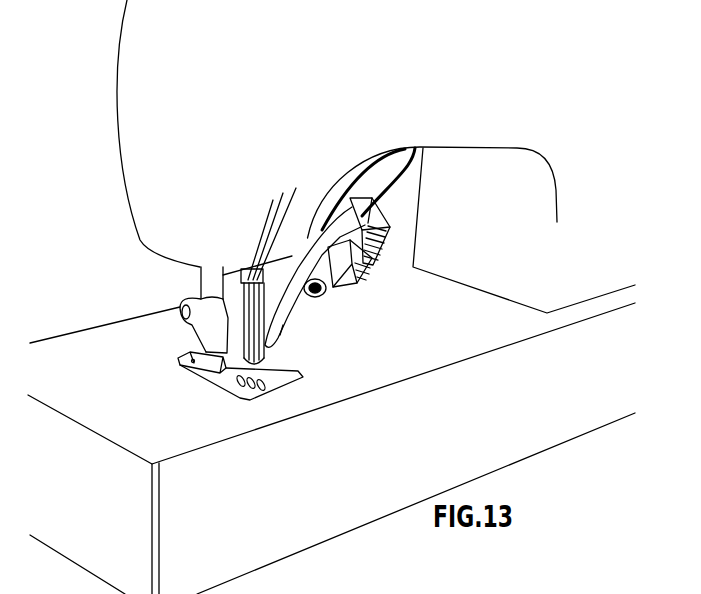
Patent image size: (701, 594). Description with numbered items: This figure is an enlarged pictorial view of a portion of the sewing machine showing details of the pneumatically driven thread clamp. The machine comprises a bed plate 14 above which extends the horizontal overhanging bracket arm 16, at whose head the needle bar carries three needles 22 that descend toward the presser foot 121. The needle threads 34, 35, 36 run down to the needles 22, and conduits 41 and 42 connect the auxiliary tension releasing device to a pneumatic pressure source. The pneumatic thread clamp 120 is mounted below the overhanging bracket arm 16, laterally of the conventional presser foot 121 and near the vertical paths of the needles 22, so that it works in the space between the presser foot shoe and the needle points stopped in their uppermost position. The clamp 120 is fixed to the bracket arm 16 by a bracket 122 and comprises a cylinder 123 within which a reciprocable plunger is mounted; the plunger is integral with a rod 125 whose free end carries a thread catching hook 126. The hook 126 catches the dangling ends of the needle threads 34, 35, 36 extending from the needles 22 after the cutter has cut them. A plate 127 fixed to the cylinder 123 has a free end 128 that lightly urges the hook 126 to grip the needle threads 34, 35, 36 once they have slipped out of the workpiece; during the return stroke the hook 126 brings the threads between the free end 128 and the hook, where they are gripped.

The bed plate 14 is at (545, 440).
The overhanging bracket arm 16 is at (463, 134).
The needles 22 is at (283, 331).
The needle thread 34 is at (265, 235).
The needle thread 35 is at (275, 208).
The needle thread 36 is at (297, 188).
The conduit 41 is at (402, 171).
The conduit 42 is at (366, 173).
The pneumatic thread clamp 120 is at (387, 242).
The presser foot 121 is at (228, 377).
The bracket 122 is at (368, 274).
The cylinder 123 is at (342, 292).
The rod 125 is at (318, 300).
The thread catching hook 126 is at (306, 300).
The plate 127 is at (352, 210).
The free end 128 is at (282, 330).